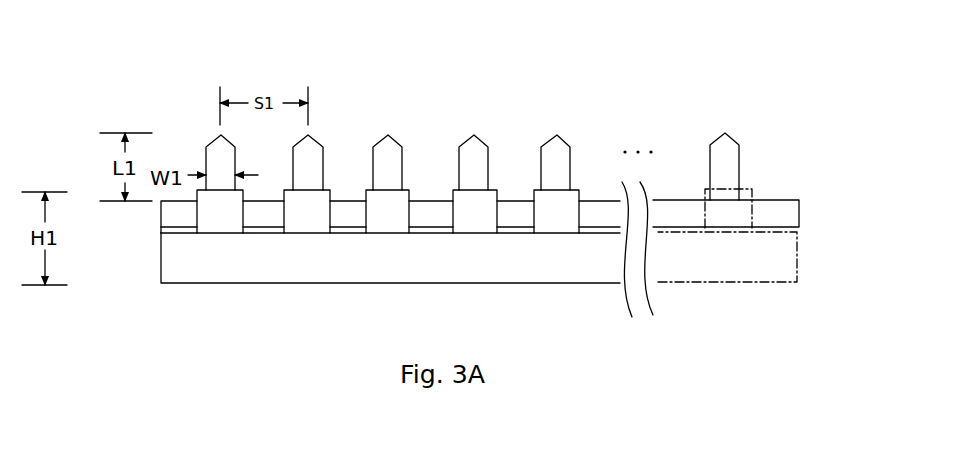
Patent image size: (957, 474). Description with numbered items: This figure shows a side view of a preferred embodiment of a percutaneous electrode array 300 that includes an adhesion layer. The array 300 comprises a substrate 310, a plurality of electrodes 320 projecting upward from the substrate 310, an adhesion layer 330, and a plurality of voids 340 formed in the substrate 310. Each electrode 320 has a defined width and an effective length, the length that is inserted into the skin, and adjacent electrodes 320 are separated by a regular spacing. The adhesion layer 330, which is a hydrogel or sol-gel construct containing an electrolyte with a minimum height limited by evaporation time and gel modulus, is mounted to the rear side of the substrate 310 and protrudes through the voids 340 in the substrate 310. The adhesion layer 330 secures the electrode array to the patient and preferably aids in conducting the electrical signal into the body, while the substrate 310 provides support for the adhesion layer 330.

The percutaneous electrode array 300 is at (592, 64).
The substrate 310 is at (799, 208).
The electrodes 320 is at (740, 158).
The adhesion layer 330 is at (161, 263).
The voids 340 is at (504, 195).